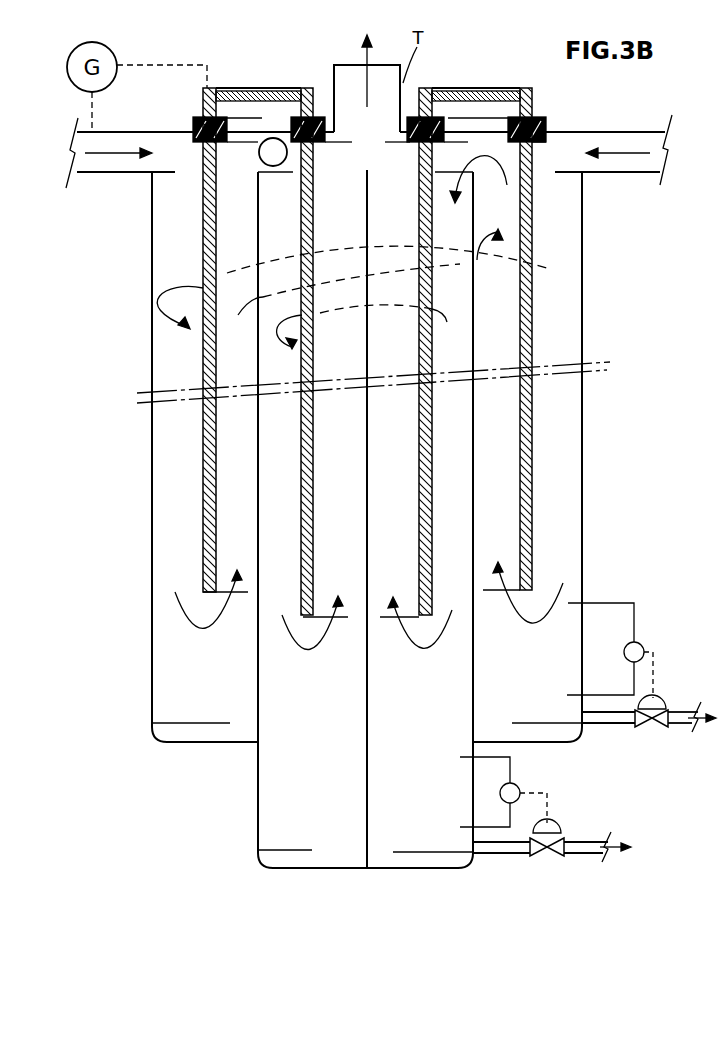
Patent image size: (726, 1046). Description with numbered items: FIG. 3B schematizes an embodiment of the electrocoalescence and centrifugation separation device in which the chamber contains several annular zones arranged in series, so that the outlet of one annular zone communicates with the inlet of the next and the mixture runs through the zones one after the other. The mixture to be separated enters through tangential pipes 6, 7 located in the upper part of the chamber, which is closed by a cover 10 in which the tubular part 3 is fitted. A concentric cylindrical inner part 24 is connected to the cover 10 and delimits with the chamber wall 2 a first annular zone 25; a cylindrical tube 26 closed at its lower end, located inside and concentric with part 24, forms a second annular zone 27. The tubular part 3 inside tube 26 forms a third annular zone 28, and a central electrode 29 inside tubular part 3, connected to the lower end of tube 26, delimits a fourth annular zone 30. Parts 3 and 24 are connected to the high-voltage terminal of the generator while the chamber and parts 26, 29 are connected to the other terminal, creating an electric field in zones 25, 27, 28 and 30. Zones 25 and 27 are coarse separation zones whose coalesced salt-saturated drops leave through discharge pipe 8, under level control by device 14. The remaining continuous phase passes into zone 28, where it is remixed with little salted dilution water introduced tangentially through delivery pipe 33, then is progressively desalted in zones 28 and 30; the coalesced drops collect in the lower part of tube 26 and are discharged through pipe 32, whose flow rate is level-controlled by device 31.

The outer vessel wall 2 is at (585, 207).
The tubular part 3 is at (427, 433).
The pipe for introducing the mixture 6 is at (618, 137).
The pipe for introducing the mixture 7 is at (78, 127).
The discharge pipe 8 is at (682, 710).
The cover 10 is at (553, 130).
The device for detecting the interface level 14 is at (650, 622).
The concentric cylindrical inner part 24 is at (532, 280).
The first annular zone 25 is at (553, 237).
The cylindrical tube closed at the lower end 26 is at (473, 347).
The second annular zone 27 is at (502, 315).
The third annular zone 28 is at (457, 407).
The central electrode 29 is at (362, 810).
The fourth annular zone 30 is at (388, 475).
The level-control device 31 is at (541, 779).
The discharge pipe 32 is at (597, 840).
The delivery pipe 33 is at (263, 160).